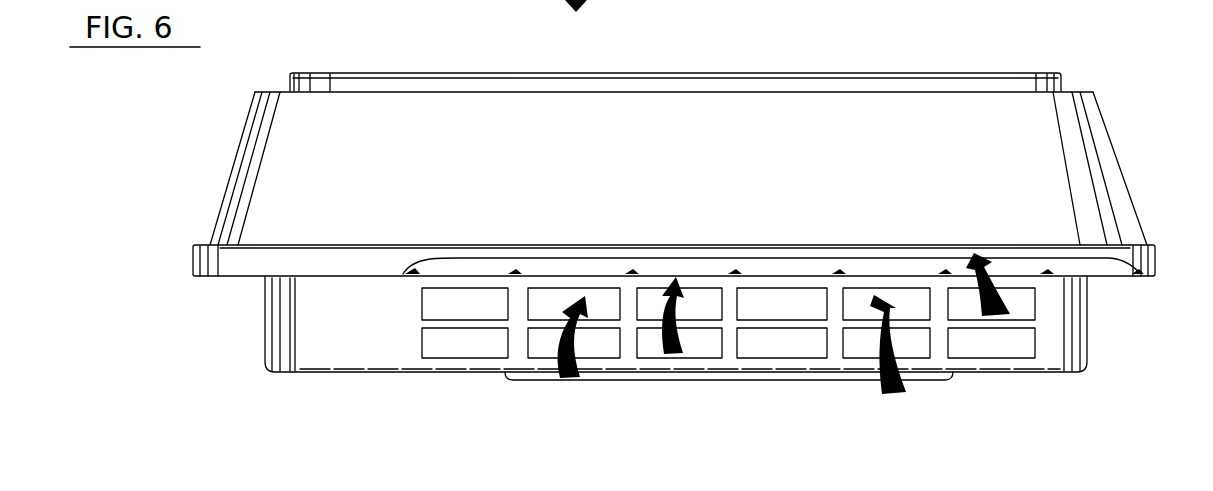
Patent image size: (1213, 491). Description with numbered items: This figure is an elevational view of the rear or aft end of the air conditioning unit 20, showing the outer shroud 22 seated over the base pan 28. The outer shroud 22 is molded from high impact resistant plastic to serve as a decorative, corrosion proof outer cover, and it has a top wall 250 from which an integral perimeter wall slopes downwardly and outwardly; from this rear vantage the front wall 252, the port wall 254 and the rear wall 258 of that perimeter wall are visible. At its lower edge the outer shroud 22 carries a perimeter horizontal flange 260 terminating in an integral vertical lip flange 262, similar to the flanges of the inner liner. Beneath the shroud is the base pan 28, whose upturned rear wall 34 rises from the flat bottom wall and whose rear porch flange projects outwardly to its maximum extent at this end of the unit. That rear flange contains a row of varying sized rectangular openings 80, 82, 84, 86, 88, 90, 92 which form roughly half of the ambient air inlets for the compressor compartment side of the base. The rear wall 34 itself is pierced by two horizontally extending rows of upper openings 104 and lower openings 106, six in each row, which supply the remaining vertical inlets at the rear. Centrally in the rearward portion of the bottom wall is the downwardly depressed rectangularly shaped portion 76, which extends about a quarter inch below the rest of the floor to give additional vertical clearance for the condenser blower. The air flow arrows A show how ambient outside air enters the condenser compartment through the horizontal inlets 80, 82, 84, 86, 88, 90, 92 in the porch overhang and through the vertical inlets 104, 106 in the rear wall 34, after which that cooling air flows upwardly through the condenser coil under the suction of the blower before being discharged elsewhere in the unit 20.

The air conditioning unit 20 is at (405, 56).
The outer shroud 22 is at (238, 123).
The base pan 28 is at (257, 331).
The rear wall 34 is at (340, 365).
The downwardly depressed rectangularly shaped portion 76 is at (731, 381).
The rectangular opening 80 is at (464, 272).
The rectangular opening 82 is at (566, 272).
The rectangular opening 84 is at (661, 272).
The rectangular opening 86 is at (768, 272).
The rectangular opening 88 is at (871, 272).
The rectangular opening 90 is at (956, 272).
The rectangular opening 92 is at (1061, 272).
The upper openings 104 is at (490, 318).
The lower openings 106 is at (490, 357).
The top wall 250 is at (728, 76).
The front wall 252 is at (222, 205).
The port wall 254 is at (528, 100).
The rear wall 258 is at (1120, 168).
The perimeter horizontal flange 260 is at (338, 246).
The vertical lip flange 262 is at (340, 268).
The air flow arrows A is at (1000, 262).